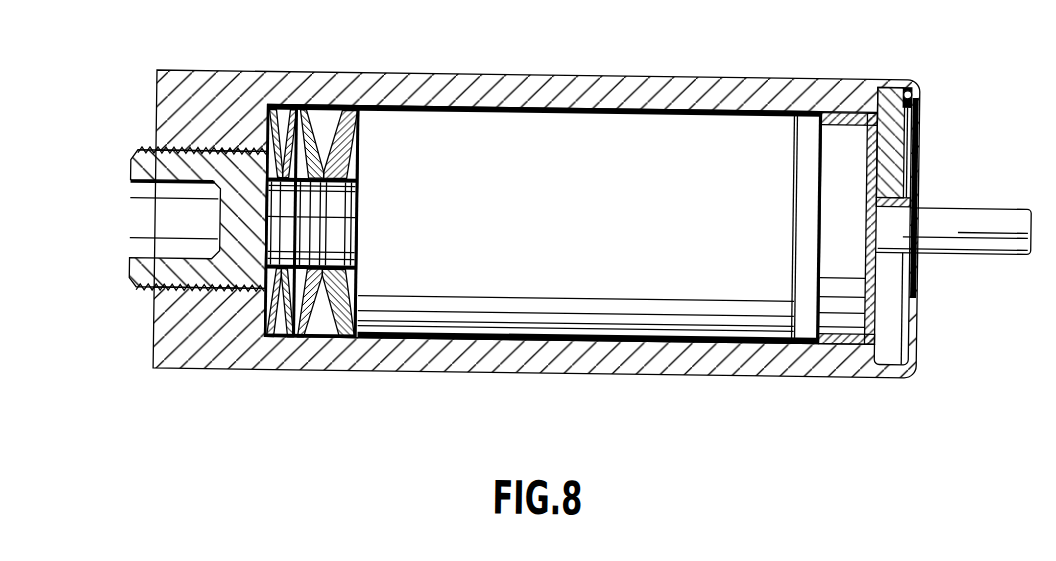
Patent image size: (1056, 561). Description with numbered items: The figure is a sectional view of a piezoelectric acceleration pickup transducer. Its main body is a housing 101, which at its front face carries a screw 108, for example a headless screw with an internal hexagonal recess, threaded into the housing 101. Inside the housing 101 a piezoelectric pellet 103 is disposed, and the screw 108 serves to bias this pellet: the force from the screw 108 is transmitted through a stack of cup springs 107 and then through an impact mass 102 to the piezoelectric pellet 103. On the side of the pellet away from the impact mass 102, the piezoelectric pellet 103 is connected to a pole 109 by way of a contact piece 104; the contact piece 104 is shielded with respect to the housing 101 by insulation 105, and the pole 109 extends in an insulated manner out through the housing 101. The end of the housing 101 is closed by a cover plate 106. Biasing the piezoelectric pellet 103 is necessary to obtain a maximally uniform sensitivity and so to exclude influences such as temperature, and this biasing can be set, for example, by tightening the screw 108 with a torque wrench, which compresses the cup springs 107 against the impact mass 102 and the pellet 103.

The housing 101 is at (219, 88).
The impact mass 102 is at (539, 118).
The piezoelectric pellet 103 is at (813, 116).
The contact piece 104 is at (838, 124).
The insulation 105 is at (876, 124).
The cover plate 106 is at (900, 157).
The cup springs 107 is at (314, 333).
The screw 108 is at (144, 268).
The pole 109 is at (998, 239).